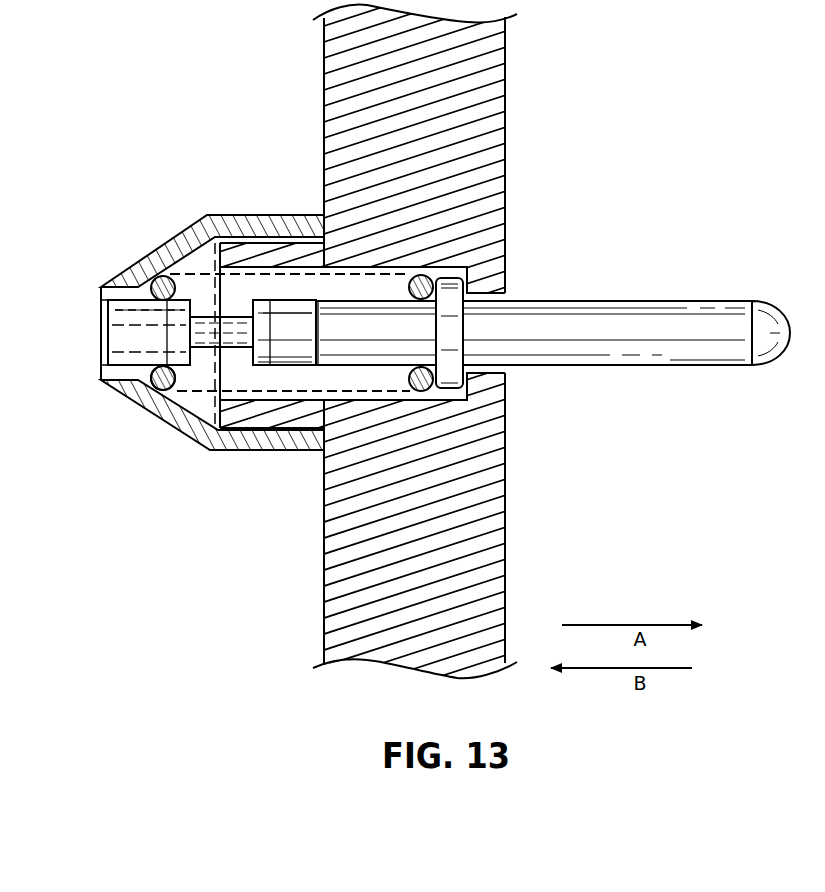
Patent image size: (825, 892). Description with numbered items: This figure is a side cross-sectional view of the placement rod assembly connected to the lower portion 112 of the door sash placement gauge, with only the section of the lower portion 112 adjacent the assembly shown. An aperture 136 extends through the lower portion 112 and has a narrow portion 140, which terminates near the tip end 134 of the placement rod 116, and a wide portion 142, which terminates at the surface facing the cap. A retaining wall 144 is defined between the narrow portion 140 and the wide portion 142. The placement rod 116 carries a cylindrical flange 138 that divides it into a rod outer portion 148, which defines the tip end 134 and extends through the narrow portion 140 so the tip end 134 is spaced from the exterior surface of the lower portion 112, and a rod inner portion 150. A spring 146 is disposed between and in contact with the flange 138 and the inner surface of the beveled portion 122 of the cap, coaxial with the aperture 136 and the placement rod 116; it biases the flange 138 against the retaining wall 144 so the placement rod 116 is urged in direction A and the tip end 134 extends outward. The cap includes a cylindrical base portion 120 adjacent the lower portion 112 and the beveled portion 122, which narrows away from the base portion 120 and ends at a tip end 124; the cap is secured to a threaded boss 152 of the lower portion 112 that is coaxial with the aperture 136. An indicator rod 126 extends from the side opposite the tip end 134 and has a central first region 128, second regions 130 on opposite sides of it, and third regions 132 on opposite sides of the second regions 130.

The lower portion 112 is at (505, 568).
The placement rod 116 is at (724, 293).
The cylindrical base portion 120 is at (230, 452).
The beveled portion 122 is at (155, 417).
The tip end 124 is at (100, 372).
The indicator rod 126 is at (92, 333).
The first region 128 is at (187, 402).
The second region 130 is at (183, 310).
The third region 132 is at (123, 307).
The tip end 134 is at (790, 327).
The aperture 136 is at (489, 290).
The cylindrical flange 138 is at (448, 280).
The narrow portion 140 is at (505, 368).
The wide portion 142 is at (437, 397).
The retaining wall 144 is at (467, 390).
The spring 146 is at (415, 277).
The rod outer portion 148 is at (693, 300).
The rod inner portion 150 is at (281, 318).
The threaded boss 152 is at (278, 420).